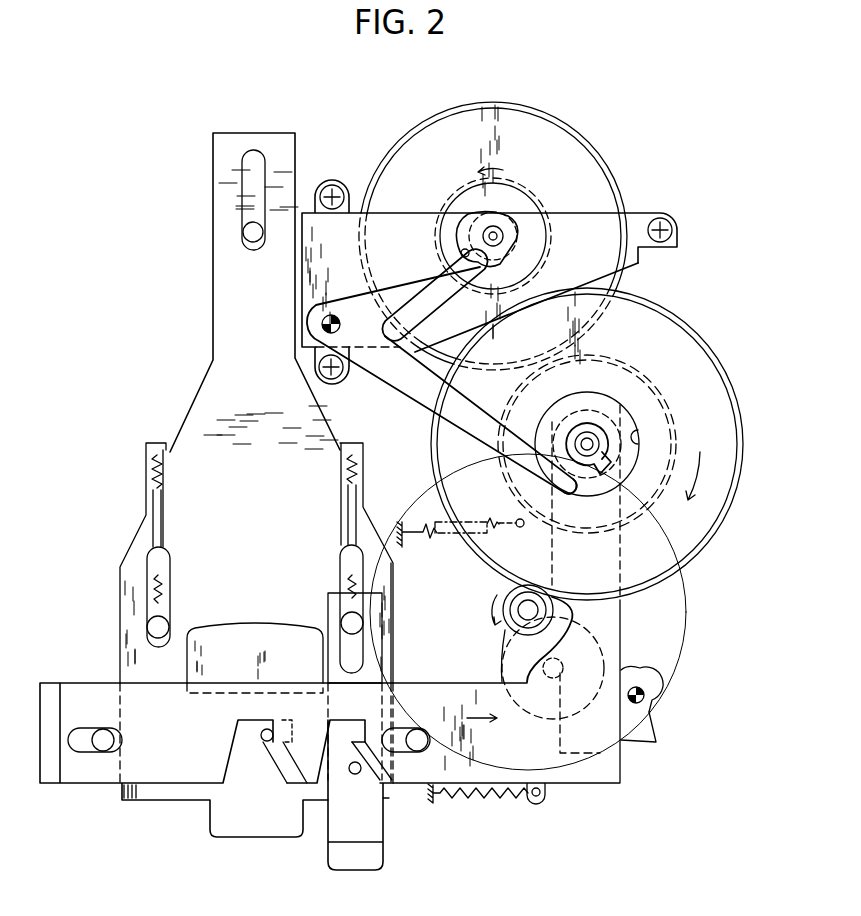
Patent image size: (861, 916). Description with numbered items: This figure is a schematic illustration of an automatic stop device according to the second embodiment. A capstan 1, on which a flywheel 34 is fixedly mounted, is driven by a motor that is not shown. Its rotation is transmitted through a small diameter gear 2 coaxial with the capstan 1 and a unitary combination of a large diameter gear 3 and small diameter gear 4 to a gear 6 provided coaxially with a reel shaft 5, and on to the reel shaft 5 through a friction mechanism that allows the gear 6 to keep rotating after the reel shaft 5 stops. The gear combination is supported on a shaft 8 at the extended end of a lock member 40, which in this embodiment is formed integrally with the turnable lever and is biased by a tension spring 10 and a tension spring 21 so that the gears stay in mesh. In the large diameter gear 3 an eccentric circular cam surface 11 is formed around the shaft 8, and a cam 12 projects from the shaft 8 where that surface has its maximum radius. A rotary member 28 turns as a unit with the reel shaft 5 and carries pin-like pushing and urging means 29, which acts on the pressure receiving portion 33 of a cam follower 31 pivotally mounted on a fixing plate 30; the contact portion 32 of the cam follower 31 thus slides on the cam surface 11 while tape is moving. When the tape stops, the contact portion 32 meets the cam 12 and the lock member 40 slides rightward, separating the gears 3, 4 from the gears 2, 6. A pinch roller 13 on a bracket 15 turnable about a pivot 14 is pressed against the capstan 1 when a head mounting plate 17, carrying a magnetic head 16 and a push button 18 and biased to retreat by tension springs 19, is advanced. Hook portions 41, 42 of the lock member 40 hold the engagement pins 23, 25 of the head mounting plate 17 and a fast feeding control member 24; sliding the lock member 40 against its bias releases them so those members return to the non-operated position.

The capstan 1 is at (503, 602).
The small diameter gear 2 is at (574, 610).
The large diameter gear 3 is at (697, 317).
The small diameter gear 4 is at (654, 372).
The reel shaft 5 is at (503, 214).
The gear 6 is at (622, 193).
The shaft 8 is at (580, 436).
The tension spring 10 is at (418, 534).
The eccentric circular cam surface 11 is at (640, 438).
The cam 12 is at (600, 470).
The pinch roller 13 is at (503, 665).
The pivot 14 is at (639, 686).
The bracket 15 is at (640, 742).
The magnetic head 16 is at (276, 623).
The head mounting plate 17 is at (196, 406).
The push button 18 is at (240, 840).
The tension springs 19 is at (165, 468).
The tension spring 21 is at (474, 802).
The engagement pin 23 is at (261, 732).
The fast feeding control member 24 is at (386, 850).
The engagement pin 25 is at (356, 780).
The rotary member 28 is at (458, 196).
The pushing and urging means 29 is at (461, 253).
The fixing plate 30 is at (578, 212).
The cam follower 31 is at (386, 384).
The contact portion 32 is at (571, 492).
The pressure receiving portion 33 is at (468, 280).
The flywheel 34 is at (684, 614).
The lock member 40 is at (405, 785).
The hook portion 41 is at (268, 750).
The hook portion 42 is at (350, 730).